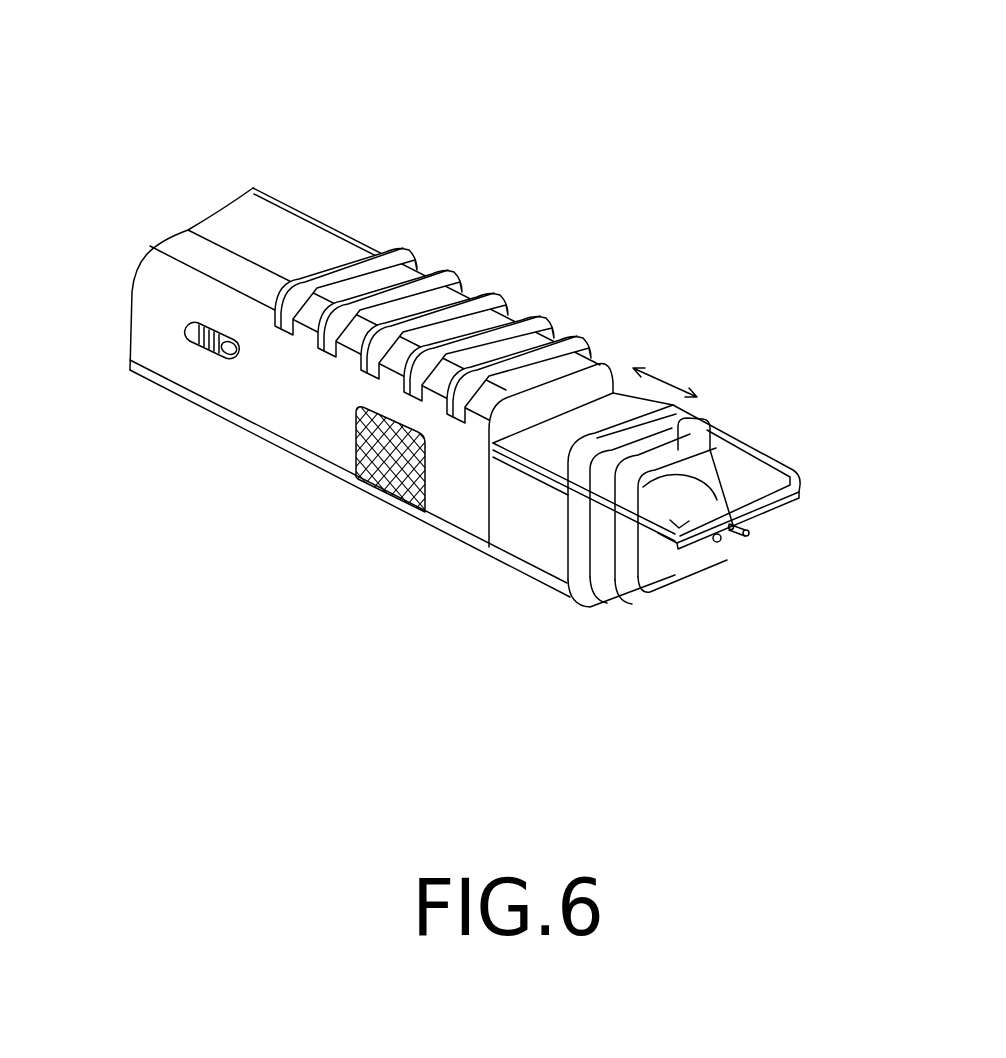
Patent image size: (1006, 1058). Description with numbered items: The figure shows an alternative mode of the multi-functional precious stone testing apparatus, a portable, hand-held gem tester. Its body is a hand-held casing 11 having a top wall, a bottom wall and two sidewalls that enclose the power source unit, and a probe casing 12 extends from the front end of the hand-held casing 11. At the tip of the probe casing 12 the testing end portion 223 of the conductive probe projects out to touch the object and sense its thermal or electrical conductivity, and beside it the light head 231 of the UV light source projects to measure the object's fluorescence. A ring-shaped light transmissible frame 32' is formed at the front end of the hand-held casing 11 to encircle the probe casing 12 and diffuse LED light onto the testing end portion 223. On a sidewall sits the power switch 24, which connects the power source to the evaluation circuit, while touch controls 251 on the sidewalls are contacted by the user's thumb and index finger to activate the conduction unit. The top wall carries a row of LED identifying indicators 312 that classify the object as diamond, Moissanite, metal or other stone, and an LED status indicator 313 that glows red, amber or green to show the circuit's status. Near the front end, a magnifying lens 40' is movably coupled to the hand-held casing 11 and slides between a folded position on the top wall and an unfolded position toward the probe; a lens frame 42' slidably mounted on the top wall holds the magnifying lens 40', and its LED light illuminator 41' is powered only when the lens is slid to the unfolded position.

The hand-held casing 11 is at (240, 223).
The LED identifying indicators 312 is at (507, 320).
The LED status indicator 313 is at (528, 353).
The lens frame 42' is at (720, 365).
The magnifying lens 40' is at (781, 435).
The LED light illuminator 41' is at (724, 452).
The testing end portion 223 is at (746, 532).
The light head 231 is at (719, 542).
The power switch 24 is at (197, 352).
The touch controls 251 is at (380, 470).
The light transmissible frame 32' is at (565, 573).
The probe casing 12 is at (628, 592).